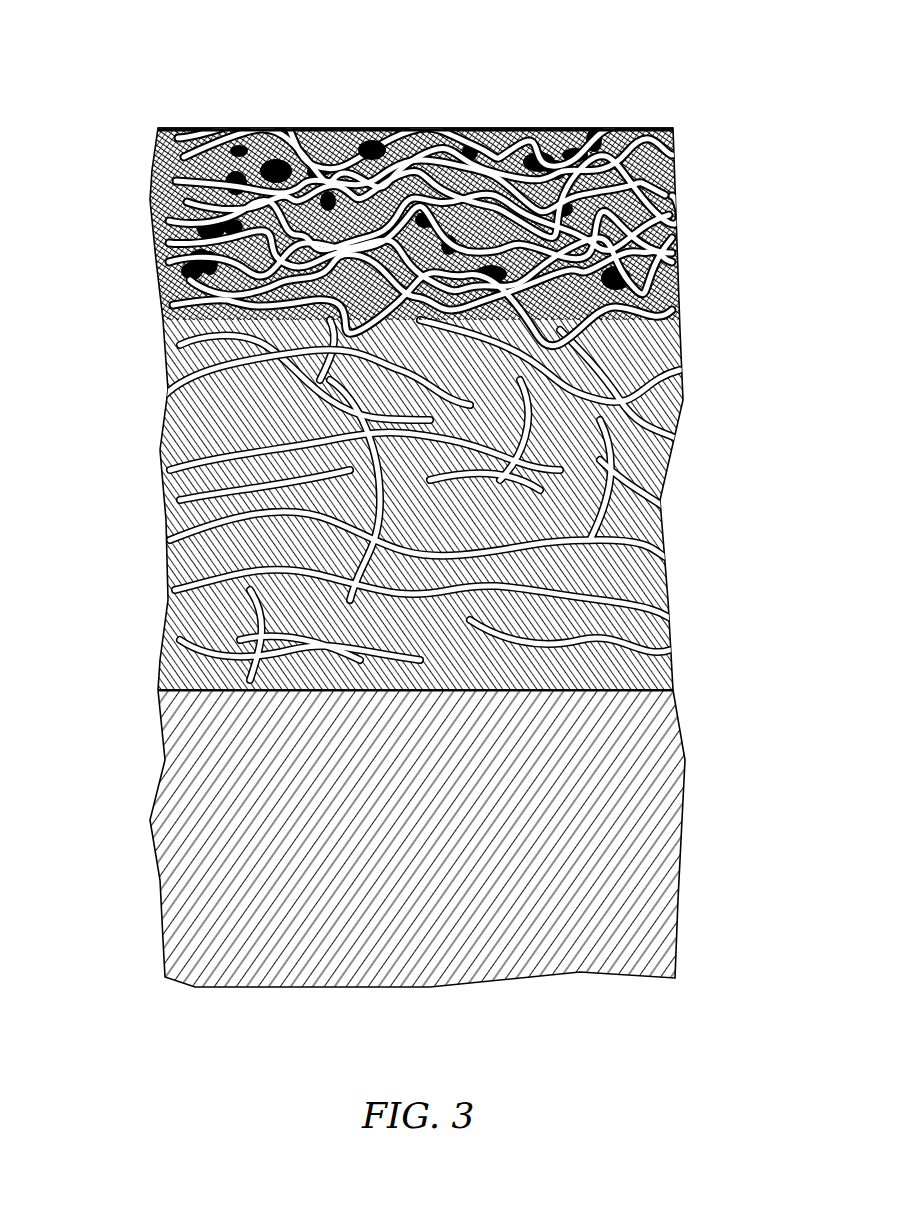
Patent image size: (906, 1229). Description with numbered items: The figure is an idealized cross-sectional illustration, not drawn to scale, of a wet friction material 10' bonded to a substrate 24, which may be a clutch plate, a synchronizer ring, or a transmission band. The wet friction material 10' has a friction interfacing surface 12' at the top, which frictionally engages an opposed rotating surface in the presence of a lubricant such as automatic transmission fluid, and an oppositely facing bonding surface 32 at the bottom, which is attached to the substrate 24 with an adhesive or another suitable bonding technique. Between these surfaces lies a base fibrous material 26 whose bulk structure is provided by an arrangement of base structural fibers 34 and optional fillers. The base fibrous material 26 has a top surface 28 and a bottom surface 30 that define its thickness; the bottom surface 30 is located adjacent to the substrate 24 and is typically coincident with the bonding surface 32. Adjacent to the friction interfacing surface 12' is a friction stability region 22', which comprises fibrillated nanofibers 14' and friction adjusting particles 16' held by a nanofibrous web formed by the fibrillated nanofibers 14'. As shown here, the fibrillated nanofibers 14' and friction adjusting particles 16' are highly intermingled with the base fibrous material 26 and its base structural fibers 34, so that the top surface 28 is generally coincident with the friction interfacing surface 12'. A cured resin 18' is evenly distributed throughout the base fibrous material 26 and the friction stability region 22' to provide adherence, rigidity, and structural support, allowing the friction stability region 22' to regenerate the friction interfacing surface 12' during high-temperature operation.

The wet friction material 10' is at (362, 494).
The friction interfacing surface 12' is at (415, 84).
The fibrillated nanofibers 14' is at (424, 184).
The friction adjusting particles 16' is at (388, 94).
The cured resin 18' is at (370, 500).
The friction stability region 22' is at (371, 224).
The substrate 24 is at (210, 820).
The base fibrous material 26 is at (157, 383).
The top surface 28 is at (556, 128).
The bottom surface 30 is at (600, 692).
The oppositely facing bonding surface 32 is at (538, 706).
The base structural fibers 34 is at (190, 442).